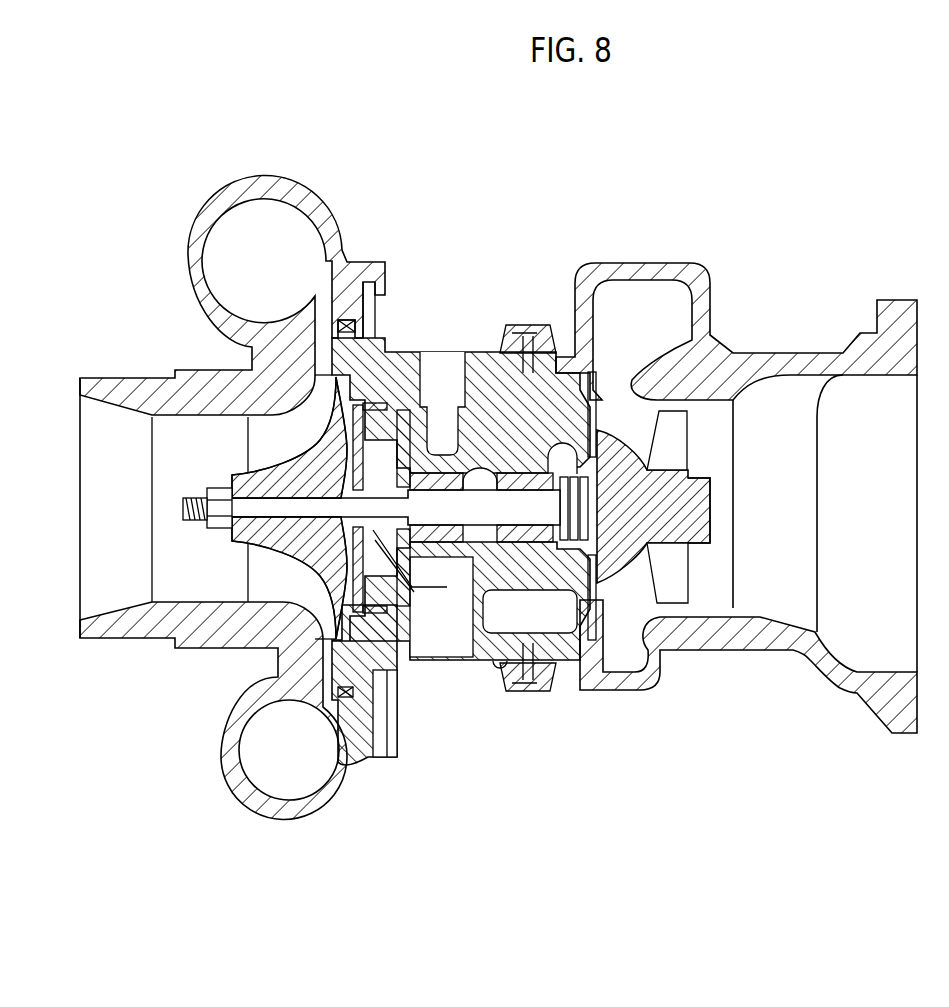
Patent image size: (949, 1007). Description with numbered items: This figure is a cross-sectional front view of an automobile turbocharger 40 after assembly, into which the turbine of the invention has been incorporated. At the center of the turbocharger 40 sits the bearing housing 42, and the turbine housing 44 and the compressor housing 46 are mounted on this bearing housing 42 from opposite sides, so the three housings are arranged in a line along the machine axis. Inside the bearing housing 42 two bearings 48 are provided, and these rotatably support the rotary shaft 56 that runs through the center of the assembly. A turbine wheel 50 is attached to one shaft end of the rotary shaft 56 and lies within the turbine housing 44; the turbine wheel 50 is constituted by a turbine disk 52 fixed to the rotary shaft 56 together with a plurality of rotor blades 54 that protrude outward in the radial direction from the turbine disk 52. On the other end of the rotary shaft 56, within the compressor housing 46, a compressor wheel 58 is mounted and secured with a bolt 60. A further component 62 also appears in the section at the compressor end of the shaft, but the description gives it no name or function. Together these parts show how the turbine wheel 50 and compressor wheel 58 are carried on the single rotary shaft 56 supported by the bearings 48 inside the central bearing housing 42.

The turbocharger 40 is at (648, 172).
The bearing housing 42 is at (473, 358).
The turbine housing 44 is at (700, 262).
The compressor housing 46 is at (290, 183).
The bearings 48 is at (412, 566).
The turbine wheel 50 is at (687, 509).
The turbine disk 52 is at (708, 474).
The rotor blades 54 is at (670, 598).
The rotary shaft 56 is at (478, 515).
The compressor wheel 58 is at (206, 649).
The bolt 60 is at (189, 496).
The nut 62 is at (205, 526).